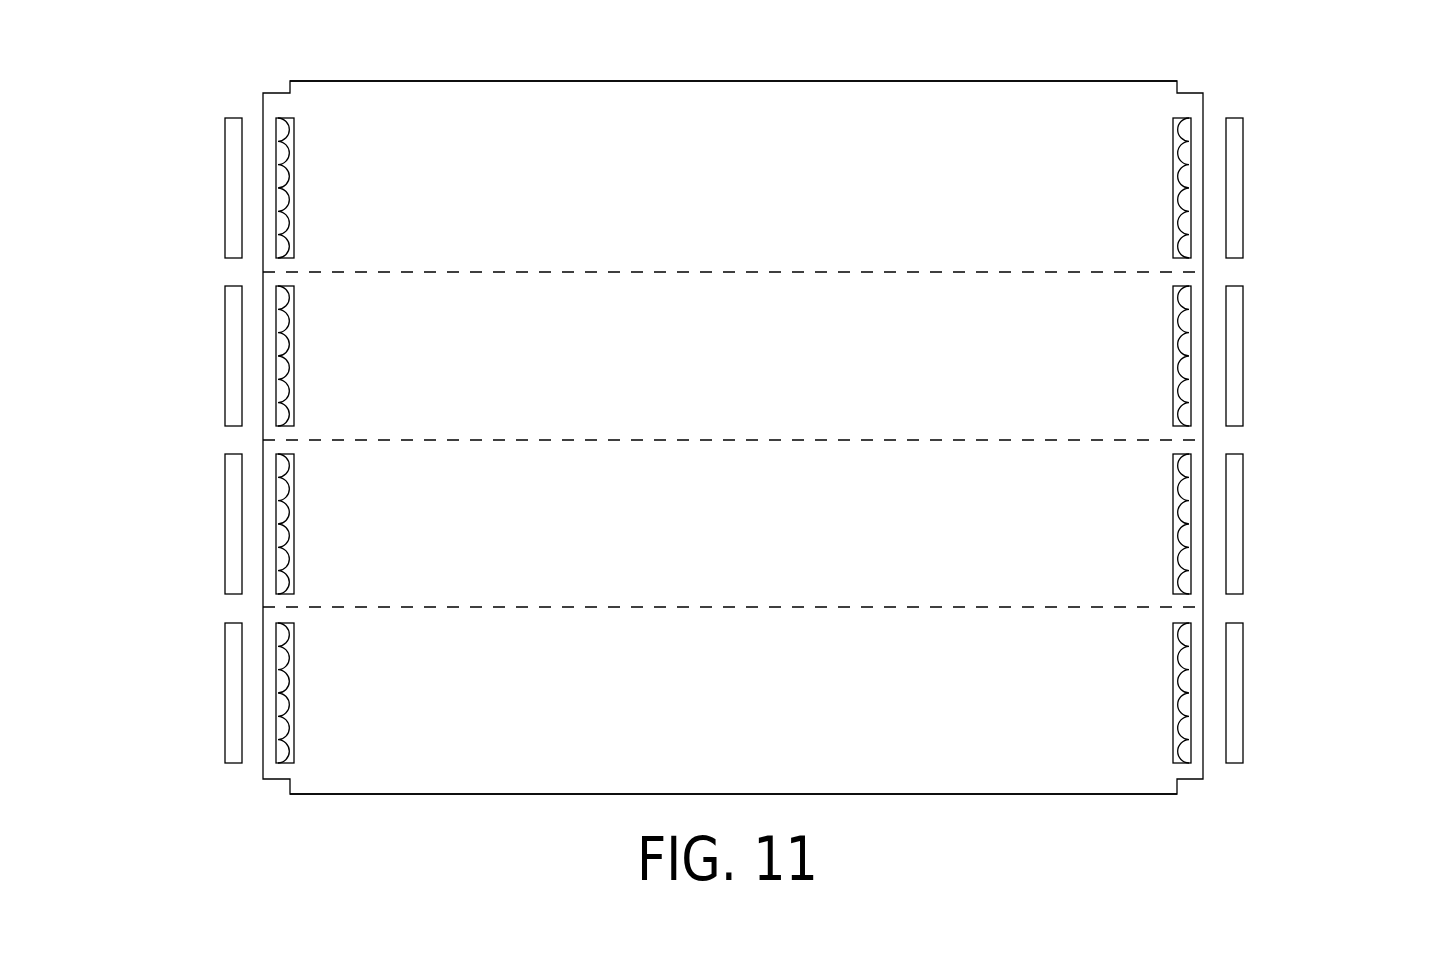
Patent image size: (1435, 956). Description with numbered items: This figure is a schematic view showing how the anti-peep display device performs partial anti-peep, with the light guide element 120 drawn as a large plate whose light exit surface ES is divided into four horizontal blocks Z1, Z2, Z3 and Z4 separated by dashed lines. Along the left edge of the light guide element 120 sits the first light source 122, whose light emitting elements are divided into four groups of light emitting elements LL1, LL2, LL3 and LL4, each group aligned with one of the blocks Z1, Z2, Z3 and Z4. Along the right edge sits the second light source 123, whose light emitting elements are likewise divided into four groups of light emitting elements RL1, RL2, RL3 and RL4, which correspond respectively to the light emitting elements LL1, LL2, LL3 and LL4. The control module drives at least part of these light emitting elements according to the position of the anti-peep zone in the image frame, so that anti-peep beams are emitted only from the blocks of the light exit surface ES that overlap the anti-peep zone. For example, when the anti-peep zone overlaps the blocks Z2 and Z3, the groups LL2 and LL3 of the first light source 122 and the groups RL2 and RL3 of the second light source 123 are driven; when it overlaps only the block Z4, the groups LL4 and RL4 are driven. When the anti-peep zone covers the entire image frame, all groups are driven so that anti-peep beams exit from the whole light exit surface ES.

The light guide plate 120 is at (148, 45).
The first light source 122 is at (112, 140).
The second light source 123 is at (1357, 137).
The light emitting elements LL1 is at (232, 166).
The light emitting elements LL2 is at (232, 354).
The light emitting elements LL3 is at (232, 542).
The light emitting elements LL4 is at (232, 731).
The light emitting elements RL1 is at (1232, 165).
The light emitting elements RL2 is at (1232, 353).
The light emitting elements RL3 is at (1232, 542).
The light emitting elements RL4 is at (1232, 730).
The block Z1 is at (700, 110).
The block Z2 is at (553, 307).
The block Z3 is at (437, 562).
The block Z4 is at (540, 755).
The light exit surface ES is at (860, 140).